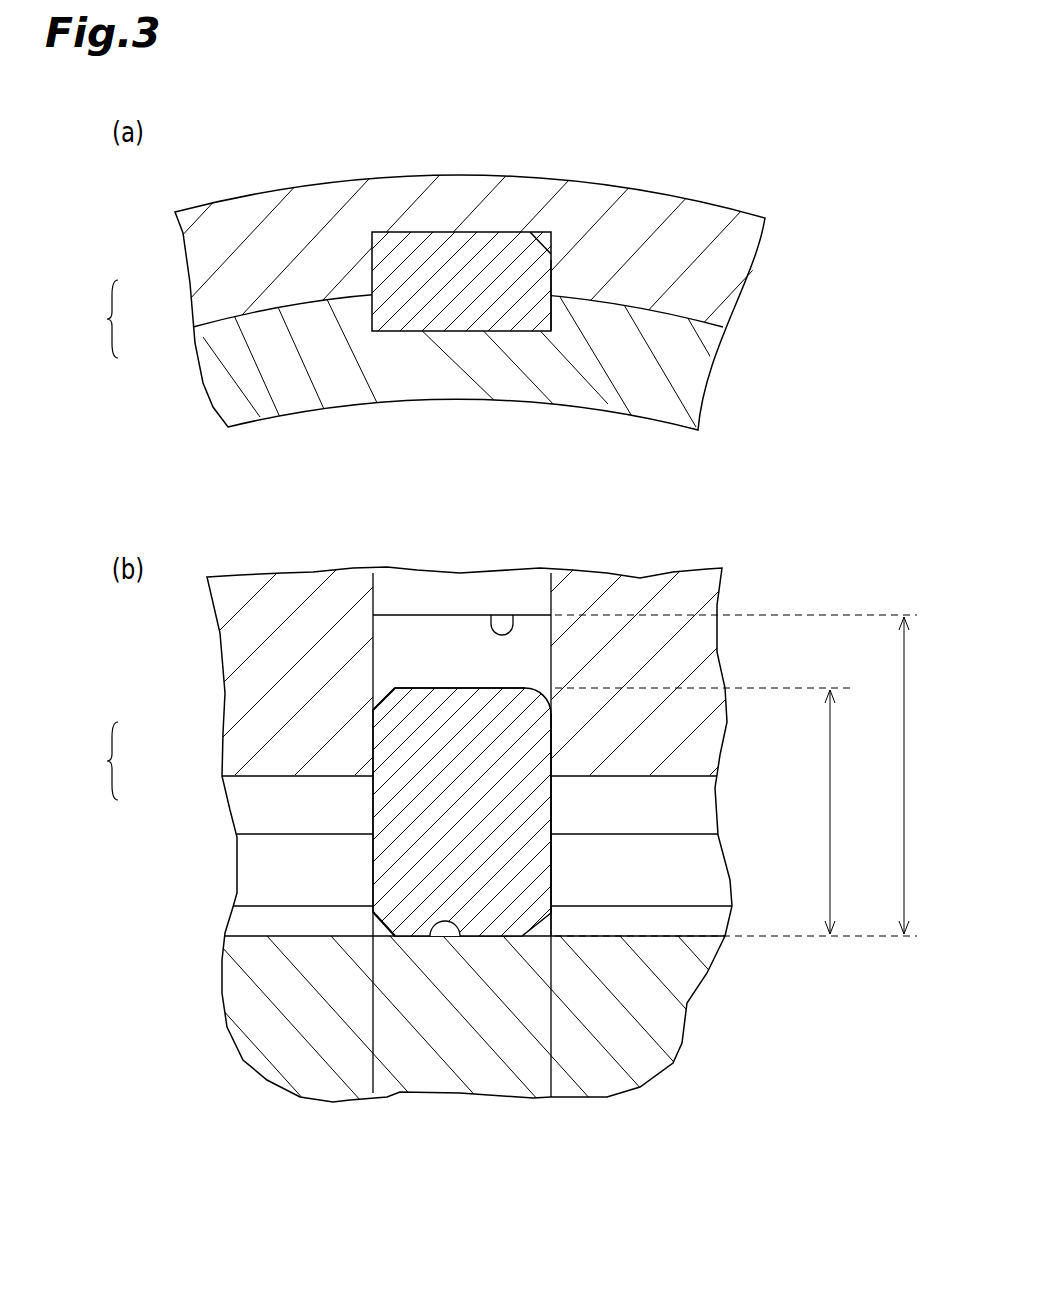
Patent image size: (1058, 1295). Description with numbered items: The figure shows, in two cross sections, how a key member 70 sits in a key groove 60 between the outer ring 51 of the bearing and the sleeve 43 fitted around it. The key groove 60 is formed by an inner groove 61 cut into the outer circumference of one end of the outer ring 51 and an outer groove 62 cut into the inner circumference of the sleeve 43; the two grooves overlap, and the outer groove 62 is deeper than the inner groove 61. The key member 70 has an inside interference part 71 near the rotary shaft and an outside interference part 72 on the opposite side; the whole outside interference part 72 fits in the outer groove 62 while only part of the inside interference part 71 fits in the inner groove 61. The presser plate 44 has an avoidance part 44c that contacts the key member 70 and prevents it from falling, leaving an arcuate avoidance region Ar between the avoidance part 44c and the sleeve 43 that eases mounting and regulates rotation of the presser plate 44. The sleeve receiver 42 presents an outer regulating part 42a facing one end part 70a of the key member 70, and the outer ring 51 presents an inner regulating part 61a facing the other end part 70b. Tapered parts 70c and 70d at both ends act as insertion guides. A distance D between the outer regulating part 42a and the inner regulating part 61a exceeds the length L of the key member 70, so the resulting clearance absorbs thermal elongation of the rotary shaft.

The sleeve 43 is at (250, 210).
The outer ring 51 is at (292, 403).
The sleeve receiver 42 is at (667, 1013).
The presser plate 44 is at (419, 921).
The avoidance part 44c is at (250, 894).
The key groove 60 is at (95, 540).
The inner groove 61 is at (372, 327).
The outer groove 62 is at (372, 244).
The key member 70 is at (678, 95).
The inside interference part 71 is at (555, 294).
The outside interference part 72 is at (553, 258).
The end part on the outer regulating part side 70a is at (552, 936).
The end part on the inner regulating part side 70b is at (453, 687).
The tapered part 70c is at (386, 940).
The tapered part 70d is at (381, 702).
The inner regulating part 61a is at (513, 615).
The outer regulating part 42a is at (430, 936).
The avoidance region Ar is at (563, 865).
The length of the key member L is at (831, 813).
The distance between the outer regulating part and the inner regulating part D is at (905, 762).